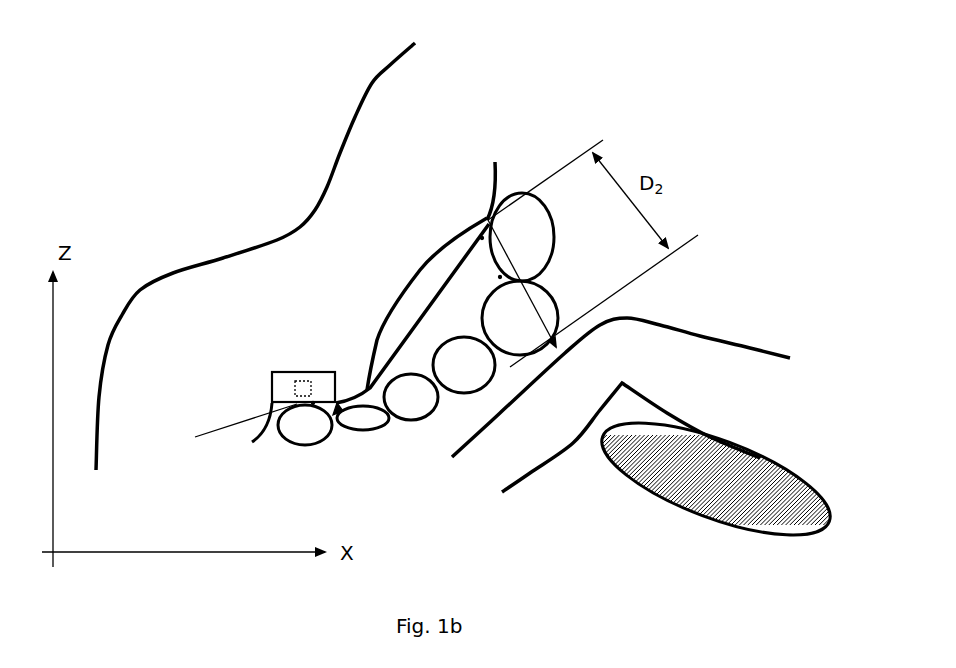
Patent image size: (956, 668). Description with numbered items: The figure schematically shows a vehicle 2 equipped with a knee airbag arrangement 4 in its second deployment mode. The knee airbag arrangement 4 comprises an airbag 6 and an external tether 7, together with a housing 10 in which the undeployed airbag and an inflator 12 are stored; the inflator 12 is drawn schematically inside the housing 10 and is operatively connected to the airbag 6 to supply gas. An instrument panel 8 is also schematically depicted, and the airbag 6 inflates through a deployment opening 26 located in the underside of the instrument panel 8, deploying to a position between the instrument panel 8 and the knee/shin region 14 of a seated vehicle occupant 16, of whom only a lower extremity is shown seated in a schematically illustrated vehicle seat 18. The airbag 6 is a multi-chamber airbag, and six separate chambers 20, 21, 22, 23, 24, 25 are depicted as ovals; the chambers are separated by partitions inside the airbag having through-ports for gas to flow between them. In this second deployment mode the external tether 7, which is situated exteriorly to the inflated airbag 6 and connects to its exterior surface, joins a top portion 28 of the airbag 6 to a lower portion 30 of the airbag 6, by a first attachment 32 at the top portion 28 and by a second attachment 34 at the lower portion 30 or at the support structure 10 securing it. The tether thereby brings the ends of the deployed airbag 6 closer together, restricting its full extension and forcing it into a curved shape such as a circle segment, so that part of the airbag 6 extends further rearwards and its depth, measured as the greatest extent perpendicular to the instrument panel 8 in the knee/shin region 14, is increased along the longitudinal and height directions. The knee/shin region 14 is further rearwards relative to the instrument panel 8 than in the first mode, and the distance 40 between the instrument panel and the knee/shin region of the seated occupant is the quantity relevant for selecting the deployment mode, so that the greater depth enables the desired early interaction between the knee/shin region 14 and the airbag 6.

The vehicle 2 is at (372, 83).
The knee airbag arrangement 4 is at (321, 456).
The airbag 6 is at (418, 344).
The external tether 7 is at (423, 320).
The instrument panel 8 is at (494, 183).
The housing 10 is at (272, 382).
The inflator 12 is at (302, 380).
The knee/shin region 14 is at (559, 378).
The vehicle occupant 16 is at (707, 360).
The vehicle seat 18 is at (717, 479).
The chamber 20 is at (305, 425).
The chamber 21 is at (363, 418).
The chamber 22 is at (411, 397).
The chamber 23 is at (464, 365).
The chamber 24 is at (520, 318).
The chamber 25 is at (522, 237).
The deployment opening 26 is at (236, 438).
The top portion 28 is at (478, 215).
The lower portion 30 is at (338, 428).
The first attachment 32 is at (480, 237).
The second attachment 34 is at (313, 403).
The distance 40 is at (500, 277).